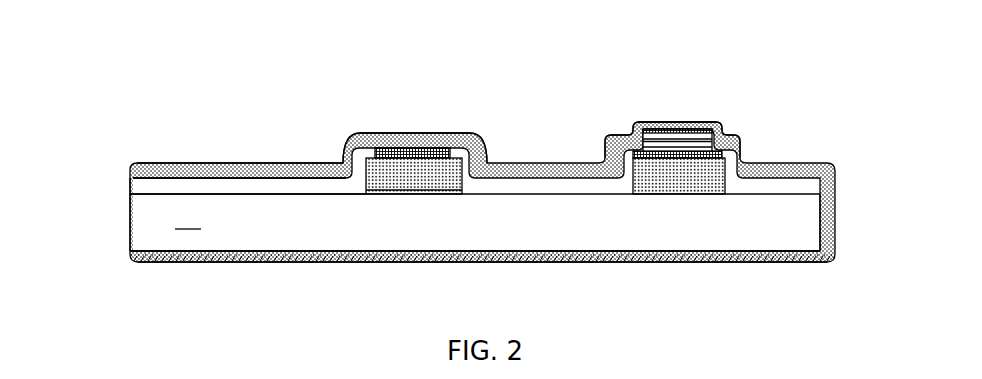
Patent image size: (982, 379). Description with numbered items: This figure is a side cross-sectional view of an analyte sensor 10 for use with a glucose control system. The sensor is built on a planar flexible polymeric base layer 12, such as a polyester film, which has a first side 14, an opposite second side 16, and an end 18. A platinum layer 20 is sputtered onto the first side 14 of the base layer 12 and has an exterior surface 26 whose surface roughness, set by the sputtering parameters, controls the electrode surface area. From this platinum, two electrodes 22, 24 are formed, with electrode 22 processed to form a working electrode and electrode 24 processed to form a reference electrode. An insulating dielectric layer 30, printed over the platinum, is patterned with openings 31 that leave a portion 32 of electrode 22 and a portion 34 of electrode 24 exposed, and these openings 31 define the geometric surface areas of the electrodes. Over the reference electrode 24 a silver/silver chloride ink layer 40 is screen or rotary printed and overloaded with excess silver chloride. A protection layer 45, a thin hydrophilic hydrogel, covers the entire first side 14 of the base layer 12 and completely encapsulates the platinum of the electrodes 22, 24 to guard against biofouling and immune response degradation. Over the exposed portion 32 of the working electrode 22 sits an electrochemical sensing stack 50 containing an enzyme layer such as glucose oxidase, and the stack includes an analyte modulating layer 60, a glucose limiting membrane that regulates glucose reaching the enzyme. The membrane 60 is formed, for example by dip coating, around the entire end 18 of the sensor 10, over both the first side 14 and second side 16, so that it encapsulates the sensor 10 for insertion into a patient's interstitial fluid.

The analyte sensor 10 is at (138, 293).
The base layer 12 is at (475, 222).
The first side 14 is at (157, 193).
The second side 16 is at (278, 252).
The end 18 is at (820, 218).
The platinum layer 20 is at (375, 183).
The electrode 22 is at (655, 194).
The electrode 24 is at (402, 194).
The exterior surface 26 is at (373, 150).
The insulating dielectric layer 30 is at (195, 187).
The openings 31 is at (412, 84).
The exposed portion of electrode 22 32 is at (698, 160).
The exposed portion of electrode 24 34 is at (422, 157).
The silver/silver chloride ink layer 40 is at (390, 155).
The protection layer 45 is at (235, 172).
The electrochemical sensing stack 50 is at (677, 140).
The analyte modulating layer 60 is at (660, 123).